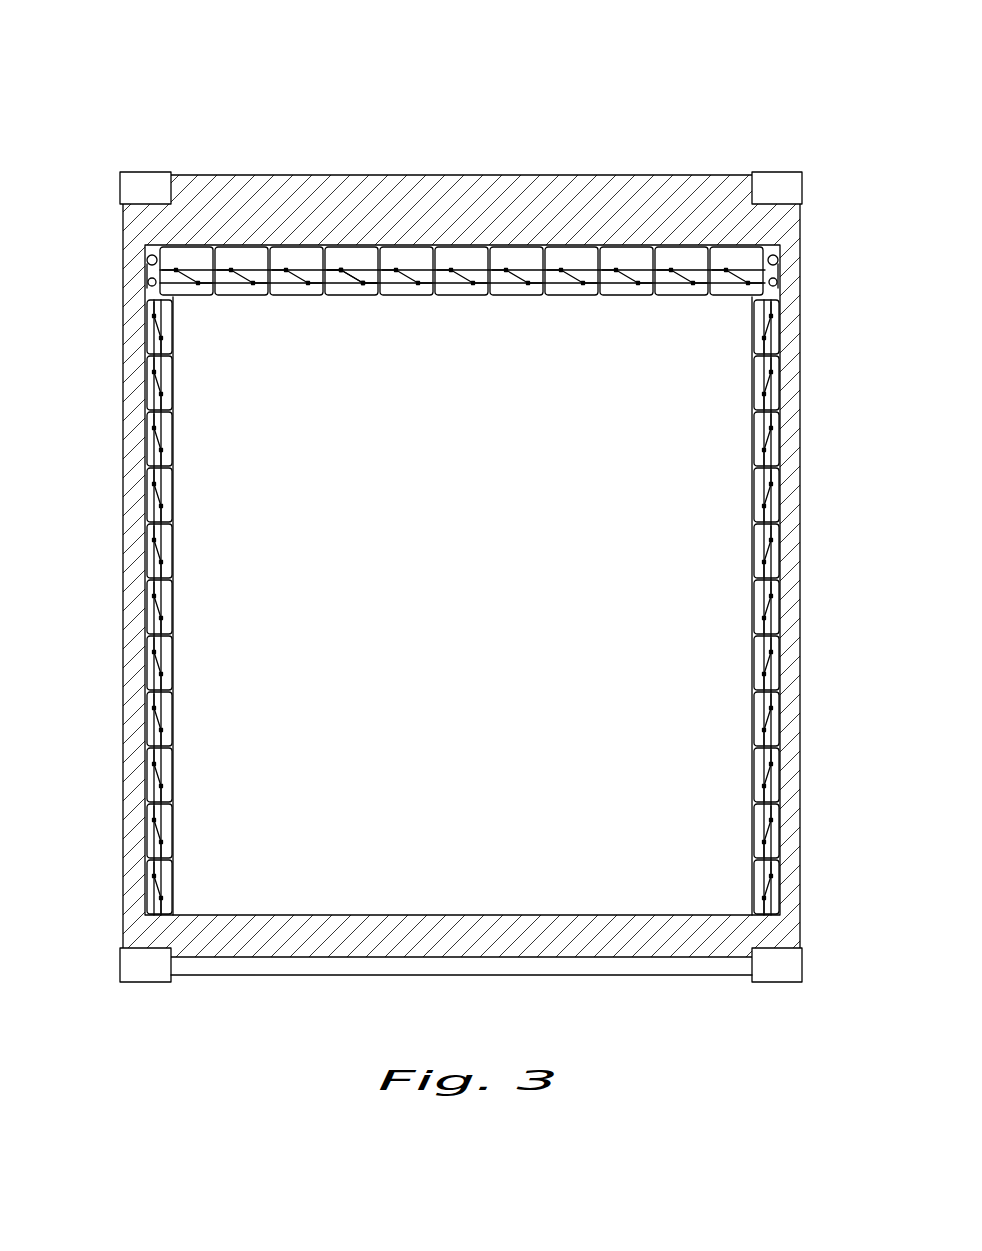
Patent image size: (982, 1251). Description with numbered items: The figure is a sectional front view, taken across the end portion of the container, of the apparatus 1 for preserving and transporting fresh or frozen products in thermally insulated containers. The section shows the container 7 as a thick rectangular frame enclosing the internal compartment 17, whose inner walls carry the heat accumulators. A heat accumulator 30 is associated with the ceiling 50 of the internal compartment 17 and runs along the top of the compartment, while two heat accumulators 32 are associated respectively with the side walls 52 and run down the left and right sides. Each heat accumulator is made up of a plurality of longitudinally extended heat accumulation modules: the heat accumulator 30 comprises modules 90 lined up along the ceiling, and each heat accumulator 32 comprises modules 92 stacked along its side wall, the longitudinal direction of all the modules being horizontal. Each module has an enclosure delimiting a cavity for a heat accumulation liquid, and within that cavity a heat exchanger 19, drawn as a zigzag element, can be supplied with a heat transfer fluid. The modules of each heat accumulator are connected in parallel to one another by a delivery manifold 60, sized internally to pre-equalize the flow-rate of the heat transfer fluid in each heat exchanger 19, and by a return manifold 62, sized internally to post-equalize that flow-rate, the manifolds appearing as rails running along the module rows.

The apparatus 1 is at (136, 105).
The container 7 is at (707, 168).
The internal compartment 17 is at (362, 845).
The heat exchanger 19 is at (523, 260).
The heat accumulator 30 is at (461, 253).
The heat accumulator 32 is at (463, 592).
The ceiling 50 is at (462, 262).
The side wall 52 is at (147, 262).
The delivery manifold 60 is at (362, 272).
The return manifold 62 is at (348, 284).
The heat accumulation module 90 is at (195, 262).
The heat accumulation module 92 is at (168, 342).